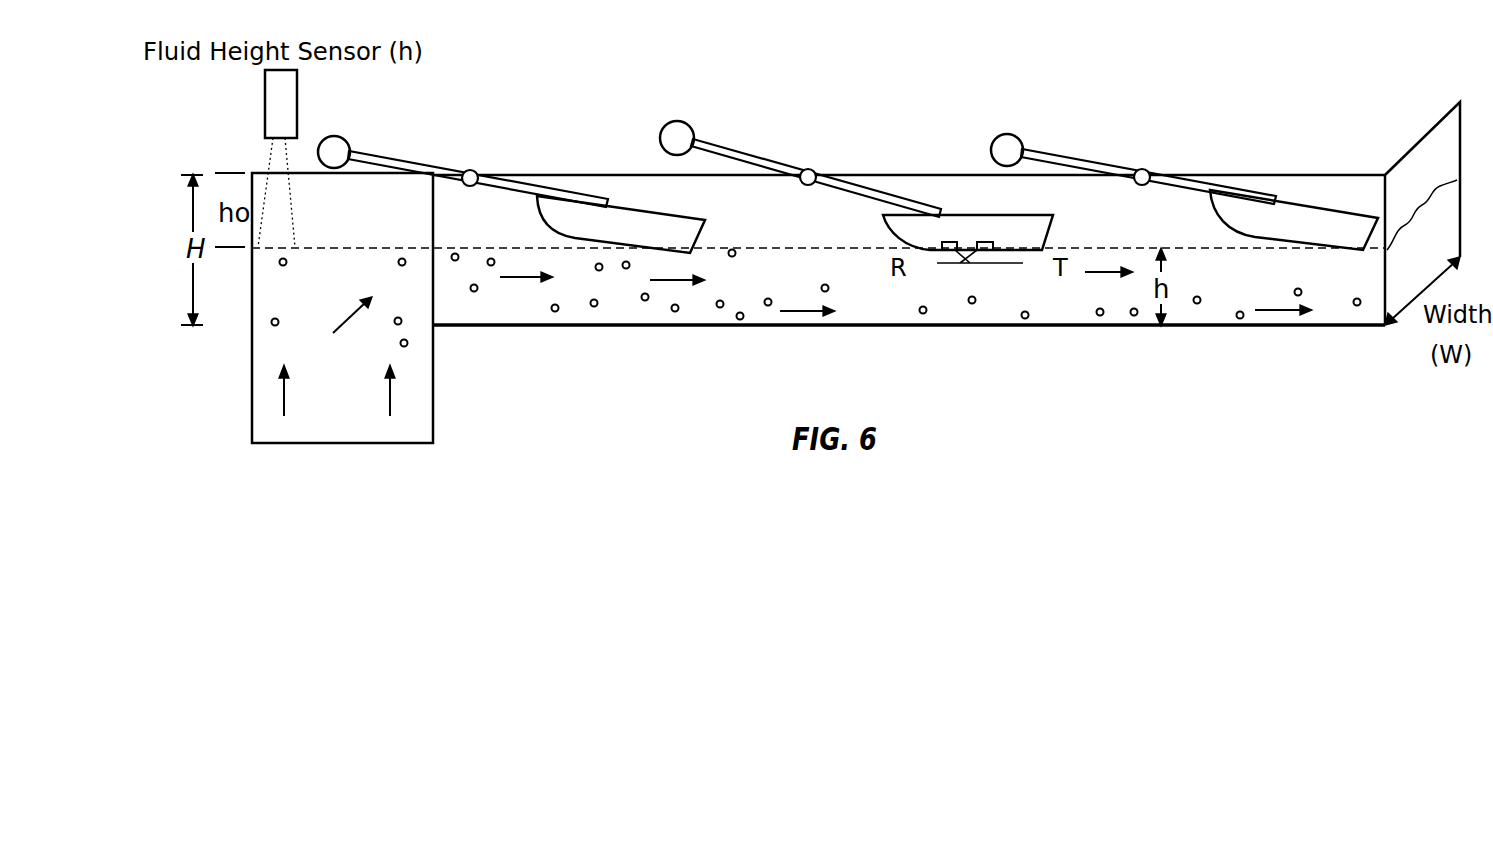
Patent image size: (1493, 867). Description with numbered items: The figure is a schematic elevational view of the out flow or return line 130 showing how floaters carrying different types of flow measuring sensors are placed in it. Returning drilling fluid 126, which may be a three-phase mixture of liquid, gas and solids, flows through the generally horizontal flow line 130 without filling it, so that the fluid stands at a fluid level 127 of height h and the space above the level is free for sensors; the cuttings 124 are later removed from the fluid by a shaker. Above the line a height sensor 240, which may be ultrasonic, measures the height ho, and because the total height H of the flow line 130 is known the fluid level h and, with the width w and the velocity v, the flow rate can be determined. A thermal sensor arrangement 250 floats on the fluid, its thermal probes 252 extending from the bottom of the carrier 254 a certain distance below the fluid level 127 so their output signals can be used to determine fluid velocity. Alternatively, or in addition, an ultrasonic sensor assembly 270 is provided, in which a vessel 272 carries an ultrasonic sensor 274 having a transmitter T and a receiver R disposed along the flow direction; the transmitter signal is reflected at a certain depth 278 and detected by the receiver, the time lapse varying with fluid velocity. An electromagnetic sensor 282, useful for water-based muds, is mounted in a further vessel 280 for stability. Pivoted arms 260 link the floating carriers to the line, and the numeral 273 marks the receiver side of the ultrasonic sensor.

The height sensor 240 is at (265, 103).
The cuttings 124 is at (740, 325).
The out flow or return line 130 is at (1030, 325).
The fluid level 127 is at (1093, 247).
The returning drilling fluid 126 is at (528, 277).
The thermal sensor arrangement 250 is at (537, 183).
The carrier 254 is at (685, 217).
The thermal probes 252 is at (677, 253).
The ultrasonic sensor assembly 270 is at (868, 187).
The vessel 272 is at (982, 213).
The receiver 273 is at (957, 252).
The reflection depth 278 is at (993, 250).
The ultrasonic sensor 274 is at (965, 263).
The pivot arm of third float 260 is at (1237, 187).
The vessel 280 is at (1300, 207).
The electromagnetic sensor 282 is at (1335, 258).